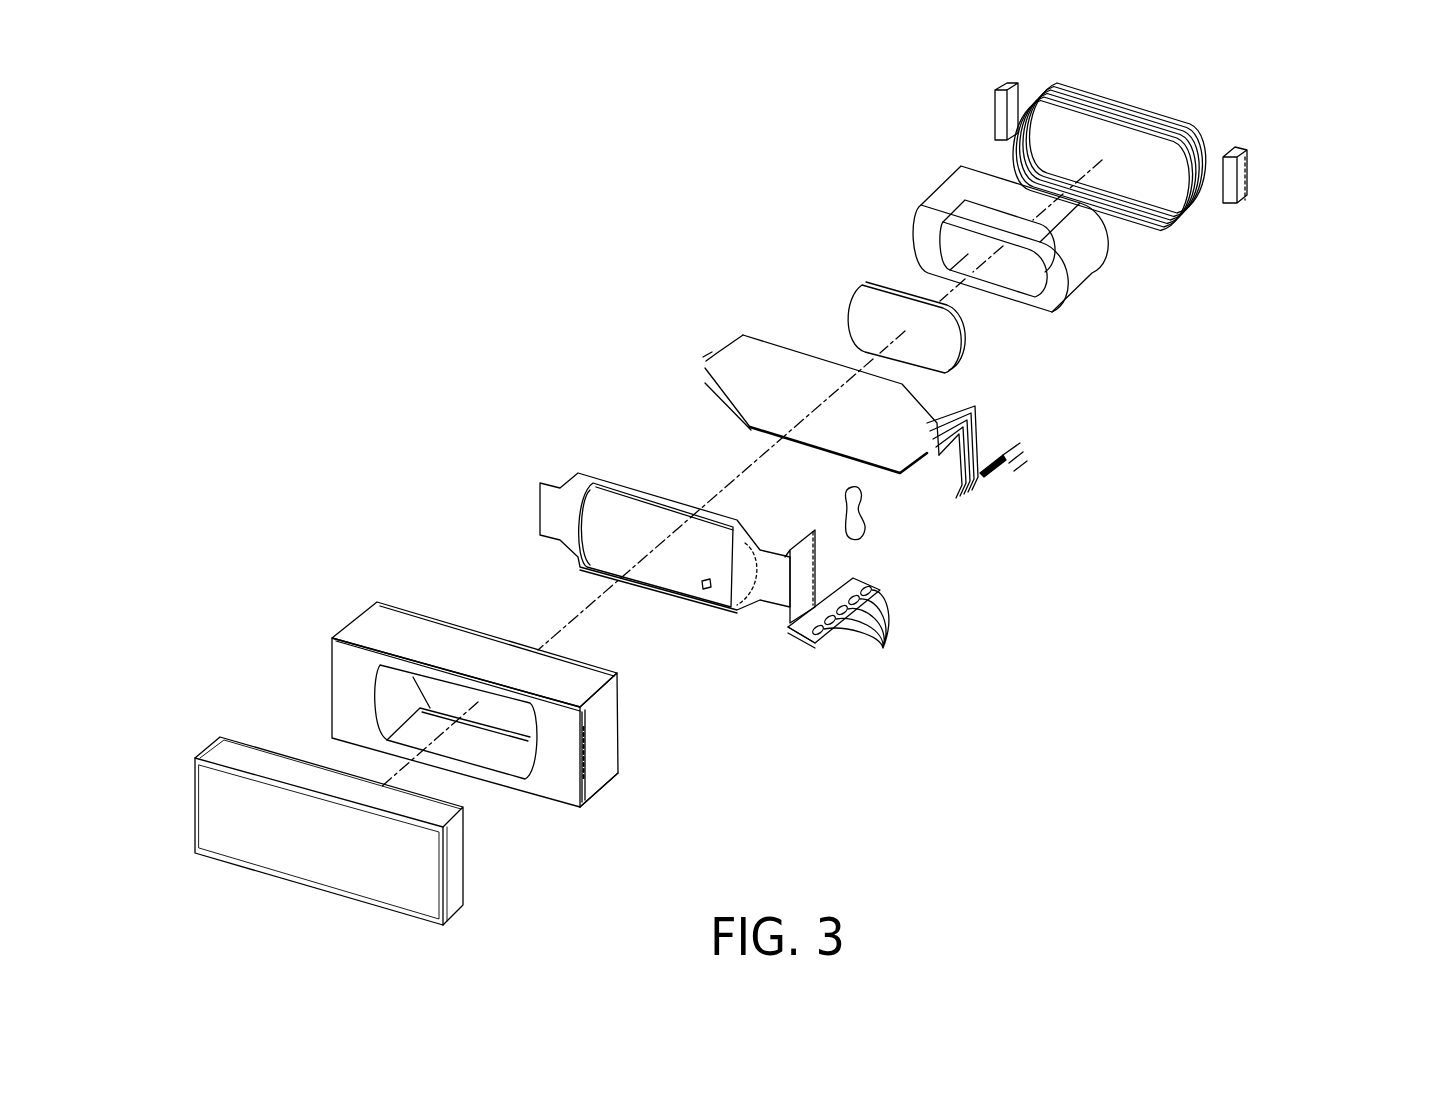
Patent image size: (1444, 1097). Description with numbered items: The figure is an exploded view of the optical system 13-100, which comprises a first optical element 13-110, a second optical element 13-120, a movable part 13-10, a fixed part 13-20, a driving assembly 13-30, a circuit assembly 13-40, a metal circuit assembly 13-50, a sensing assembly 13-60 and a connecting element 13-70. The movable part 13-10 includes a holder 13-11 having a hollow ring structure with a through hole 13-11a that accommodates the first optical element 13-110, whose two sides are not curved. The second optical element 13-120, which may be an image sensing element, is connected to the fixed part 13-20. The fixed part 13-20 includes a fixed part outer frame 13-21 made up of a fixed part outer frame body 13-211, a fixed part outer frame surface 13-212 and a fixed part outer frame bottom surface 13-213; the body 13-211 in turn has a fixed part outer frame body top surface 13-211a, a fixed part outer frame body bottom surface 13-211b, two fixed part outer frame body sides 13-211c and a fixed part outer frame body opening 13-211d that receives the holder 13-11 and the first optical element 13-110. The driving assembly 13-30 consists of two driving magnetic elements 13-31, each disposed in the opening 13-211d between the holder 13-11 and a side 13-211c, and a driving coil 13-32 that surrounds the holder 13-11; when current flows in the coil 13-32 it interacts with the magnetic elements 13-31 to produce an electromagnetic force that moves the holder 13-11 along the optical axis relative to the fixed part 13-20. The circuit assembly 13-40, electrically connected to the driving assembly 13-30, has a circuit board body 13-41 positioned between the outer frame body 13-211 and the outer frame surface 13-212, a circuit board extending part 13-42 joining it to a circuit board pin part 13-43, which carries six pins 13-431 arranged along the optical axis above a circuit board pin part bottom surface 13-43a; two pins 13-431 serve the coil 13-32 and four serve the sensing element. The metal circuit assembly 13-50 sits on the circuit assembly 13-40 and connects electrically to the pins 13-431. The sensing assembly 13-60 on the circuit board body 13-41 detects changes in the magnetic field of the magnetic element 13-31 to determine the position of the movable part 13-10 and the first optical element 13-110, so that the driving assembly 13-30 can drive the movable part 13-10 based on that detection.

The optical system 13-100 is at (196, 88).
The movable part 13-10 is at (942, 150).
The holder 13-11 is at (1093, 252).
The through hole 13-11a is at (975, 236).
The first optical element 13-110 is at (955, 347).
The fixed part 13-20 is at (368, 588).
The fixed part outer frame 13-21 is at (580, 683).
The fixed part outer frame body 13-211 is at (455, 640).
The fixed part outer frame body top surface 13-211a is at (600, 682).
The fixed part outer frame body bottom surface 13-211b is at (598, 792).
The fixed part outer frame body side 13-211c is at (352, 614).
The fixed part outer frame body opening 13-211d is at (443, 697).
The fixed part outer frame surface 13-212 is at (342, 662).
The fixed part outer frame bottom surface 13-213 is at (508, 648).
The driving assembly 13-30 is at (1337, 357).
The driving magnetic element 13-31 is at (1005, 90).
The driving coil 13-32 is at (1177, 118).
The circuit assembly 13-40 is at (1337, 441).
The circuit board body 13-41 is at (548, 505).
The circuit board extending part 13-42 is at (810, 562).
The circuit board pin part 13-43 is at (860, 578).
The pin 13-431 is at (867, 636).
The circuit board pin part bottom surface 13-43a is at (800, 645).
The metal circuit assembly 13-50 is at (727, 342).
The sensing assembly 13-60 is at (708, 590).
The connecting element 13-70 is at (862, 505).
The second optical element 13-120 is at (226, 754).